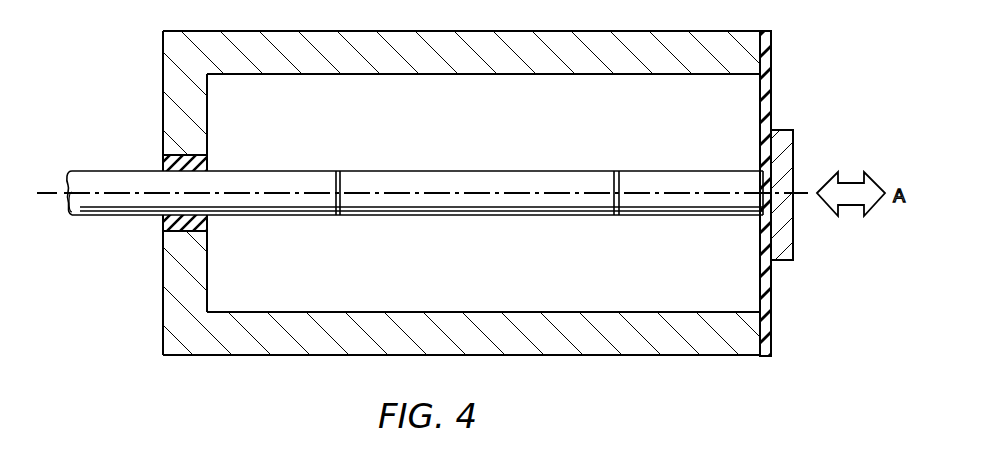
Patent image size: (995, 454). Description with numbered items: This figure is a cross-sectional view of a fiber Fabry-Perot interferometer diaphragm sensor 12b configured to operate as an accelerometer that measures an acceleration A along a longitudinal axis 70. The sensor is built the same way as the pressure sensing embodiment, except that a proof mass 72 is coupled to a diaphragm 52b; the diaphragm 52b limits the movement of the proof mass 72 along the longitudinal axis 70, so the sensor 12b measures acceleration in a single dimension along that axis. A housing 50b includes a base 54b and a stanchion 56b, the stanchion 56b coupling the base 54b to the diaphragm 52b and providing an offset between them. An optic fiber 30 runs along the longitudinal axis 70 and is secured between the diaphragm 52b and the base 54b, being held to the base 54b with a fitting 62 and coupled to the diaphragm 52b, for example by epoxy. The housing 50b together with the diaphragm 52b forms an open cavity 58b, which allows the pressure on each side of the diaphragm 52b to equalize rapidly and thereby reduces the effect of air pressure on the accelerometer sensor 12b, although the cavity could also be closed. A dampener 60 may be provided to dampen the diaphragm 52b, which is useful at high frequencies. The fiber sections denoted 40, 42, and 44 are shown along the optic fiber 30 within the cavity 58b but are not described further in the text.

The fiber Fabry-Perot interferometer diaphragm sensor 12b is at (497, 203).
The optic fiber 30 is at (422, 184).
The rod segment assembly 40 is at (415, 154).
The rod joint 42 is at (336, 171).
The rod joint 44 is at (614, 171).
The housing 50b is at (341, 31).
The diaphragm 52b is at (772, 310).
The base 54b is at (163, 320).
The stanchion 56b is at (312, 346).
The open cavity 58b is at (500, 311).
The dampener 60 is at (730, 262).
The fitting 62 is at (163, 160).
The longitudinal axis 70 is at (50, 194).
The proof mass 72 is at (793, 242).